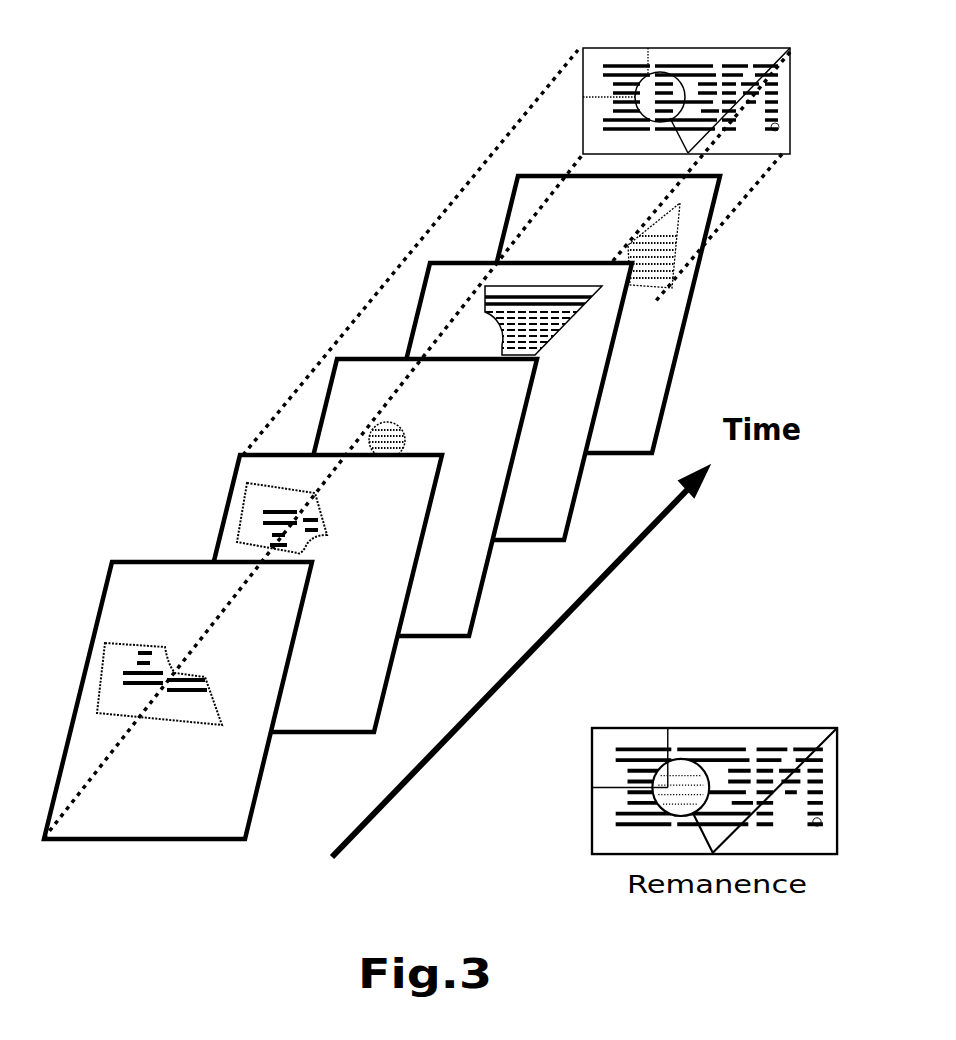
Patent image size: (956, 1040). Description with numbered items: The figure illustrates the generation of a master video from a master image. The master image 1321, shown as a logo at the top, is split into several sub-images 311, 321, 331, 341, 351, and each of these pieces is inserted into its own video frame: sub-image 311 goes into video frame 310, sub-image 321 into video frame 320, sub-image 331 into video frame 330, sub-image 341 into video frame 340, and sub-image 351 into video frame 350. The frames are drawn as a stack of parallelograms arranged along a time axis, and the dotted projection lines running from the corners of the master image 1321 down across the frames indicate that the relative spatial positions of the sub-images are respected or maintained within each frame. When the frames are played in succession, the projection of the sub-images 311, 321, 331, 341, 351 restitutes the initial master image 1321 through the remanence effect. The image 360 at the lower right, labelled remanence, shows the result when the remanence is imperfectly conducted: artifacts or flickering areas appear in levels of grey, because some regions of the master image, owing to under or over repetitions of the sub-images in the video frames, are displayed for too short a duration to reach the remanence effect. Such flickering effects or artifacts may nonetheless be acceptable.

The video frame 310 is at (178, 700).
The sub-image 311 is at (113, 663).
The video frame 320 is at (307, 593).
The sub-image 321 is at (253, 493).
The video frame 330 is at (403, 497).
The sub-image 331 is at (367, 430).
The video frame 340 is at (497, 401).
The sub-image 341 is at (573, 317).
The video frame 350 is at (585, 314).
The sub-image 351 is at (647, 263).
The image 360 is at (750, 738).
The master image 1321 is at (698, 56).